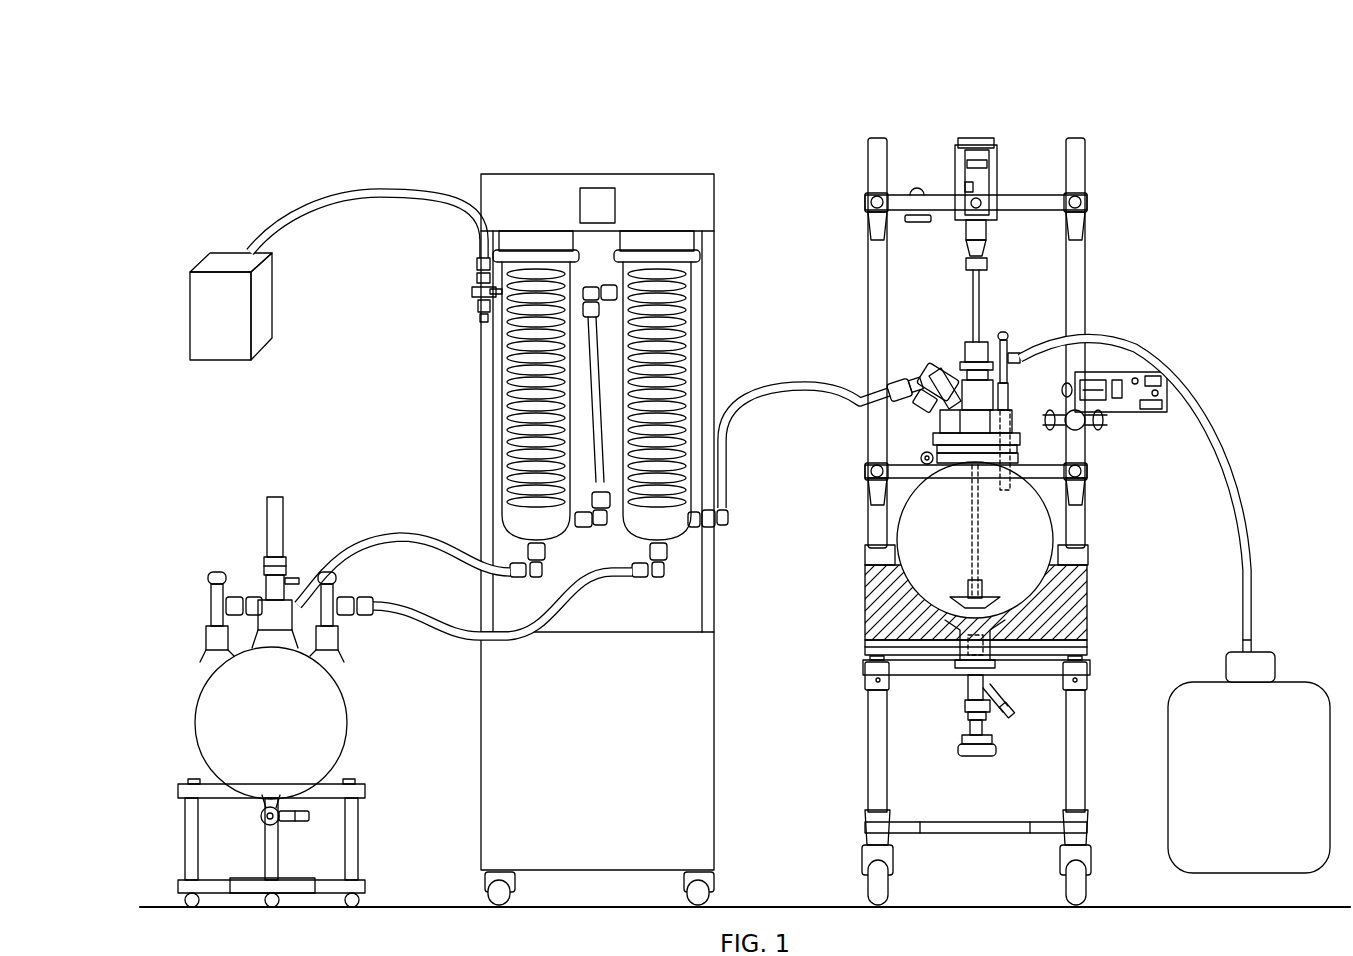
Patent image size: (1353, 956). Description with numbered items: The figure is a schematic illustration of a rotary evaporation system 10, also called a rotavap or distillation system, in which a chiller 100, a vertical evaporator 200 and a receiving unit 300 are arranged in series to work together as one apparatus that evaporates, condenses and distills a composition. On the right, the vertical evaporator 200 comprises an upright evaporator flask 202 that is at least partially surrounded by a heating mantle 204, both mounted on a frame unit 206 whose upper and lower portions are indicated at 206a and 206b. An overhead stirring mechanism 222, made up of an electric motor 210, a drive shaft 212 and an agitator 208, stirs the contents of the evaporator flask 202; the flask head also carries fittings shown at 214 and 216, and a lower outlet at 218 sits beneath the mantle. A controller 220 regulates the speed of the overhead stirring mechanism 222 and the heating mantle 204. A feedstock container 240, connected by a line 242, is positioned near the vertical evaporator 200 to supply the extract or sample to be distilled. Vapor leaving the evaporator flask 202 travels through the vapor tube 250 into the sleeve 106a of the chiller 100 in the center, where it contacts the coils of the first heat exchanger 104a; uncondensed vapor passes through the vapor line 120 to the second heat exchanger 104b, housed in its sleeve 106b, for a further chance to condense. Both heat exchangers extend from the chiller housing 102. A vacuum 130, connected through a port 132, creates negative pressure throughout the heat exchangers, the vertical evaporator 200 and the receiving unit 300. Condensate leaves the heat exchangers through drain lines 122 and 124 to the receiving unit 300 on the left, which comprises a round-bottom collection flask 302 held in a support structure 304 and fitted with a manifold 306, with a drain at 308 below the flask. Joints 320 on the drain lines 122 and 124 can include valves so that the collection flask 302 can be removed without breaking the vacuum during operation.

The rotary evaporation system 10 is at (411, 87).
The chiller 100 is at (694, 157).
The housing 102 is at (493, 740).
The heat exchanger 104a is at (670, 365).
The heat exchanger 104b is at (508, 388).
The sleeve 106a is at (690, 410).
The second condenser coil 106b is at (500, 470).
The vapor line 120 is at (590, 340).
The drain line 122 is at (528, 625).
The drain line 124 is at (395, 535).
The vacuum 130 is at (230, 263).
The drain port 132 is at (358, 192).
The vapor tube 250 is at (770, 408).
The vertical evaporator 200 is at (1112, 117).
The evaporator flask 202 is at (1035, 530).
The heating mantle 204 is at (1075, 620).
The frame unit 206 is at (1078, 271).
The upper frame section 206a is at (1108, 478).
The lower frame section 206b is at (1090, 850).
The agitator 208 is at (985, 600).
The electric motor 210 is at (974, 138).
The drive shaft 212 is at (980, 332).
The flask side neck 214 is at (947, 370).
The inlet fitting 216 is at (900, 378).
The drain valve 218 is at (1000, 710).
The controller 220 is at (1145, 370).
The overhead stirring mechanism 222 is at (997, 257).
The feedstock container 240 is at (1262, 850).
The outlet hose 242 is at (1245, 535).
The receiving unit 300 is at (193, 511).
The collection flask 302 is at (335, 730).
The support structure 304 is at (378, 788).
The manifold 306 is at (265, 620).
The drain valve 308 is at (282, 828).
The joint 320 is at (234, 588).